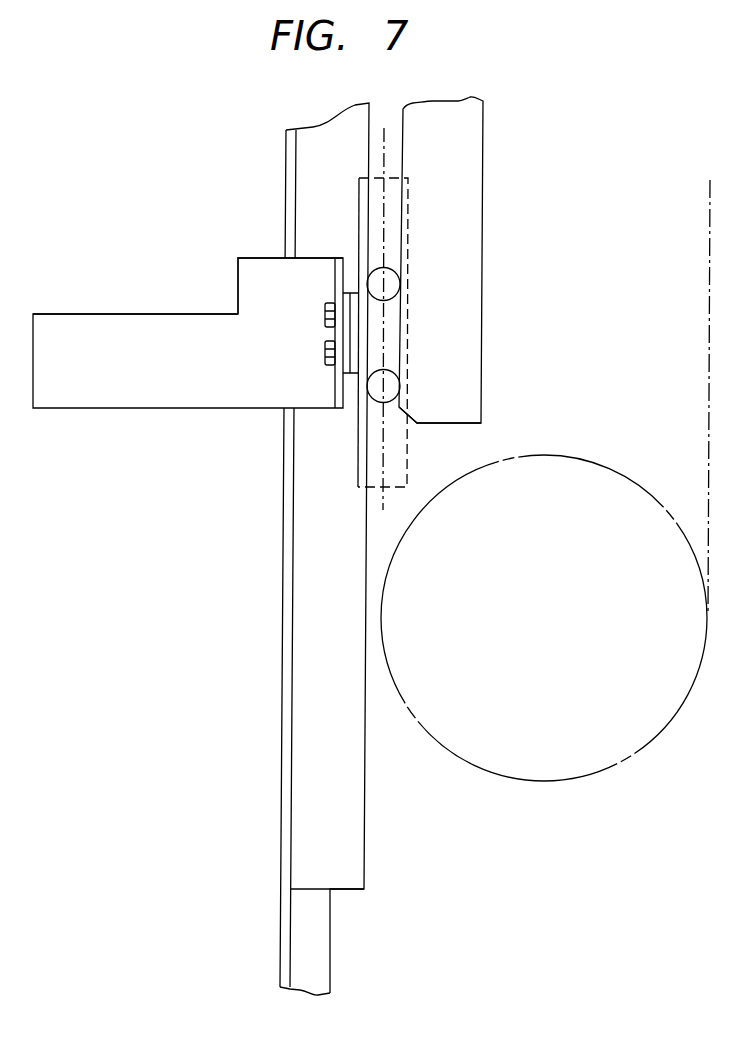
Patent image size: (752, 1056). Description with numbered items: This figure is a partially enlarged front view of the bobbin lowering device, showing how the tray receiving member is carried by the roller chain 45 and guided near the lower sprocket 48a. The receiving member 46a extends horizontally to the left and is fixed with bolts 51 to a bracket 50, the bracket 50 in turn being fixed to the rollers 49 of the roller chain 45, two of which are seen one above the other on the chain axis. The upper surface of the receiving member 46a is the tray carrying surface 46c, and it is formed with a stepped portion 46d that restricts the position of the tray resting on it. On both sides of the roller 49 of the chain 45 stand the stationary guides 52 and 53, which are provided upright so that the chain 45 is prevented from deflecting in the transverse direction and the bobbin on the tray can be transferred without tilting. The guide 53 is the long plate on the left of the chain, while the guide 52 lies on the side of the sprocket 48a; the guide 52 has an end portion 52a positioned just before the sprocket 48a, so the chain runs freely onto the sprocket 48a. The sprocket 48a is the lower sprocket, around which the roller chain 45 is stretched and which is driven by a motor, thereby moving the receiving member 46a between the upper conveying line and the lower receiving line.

The roller chain 45 is at (384, 223).
The receiving member 46a is at (172, 397).
The tray carrying surface 46c is at (141, 312).
The stepped portion 46d is at (237, 309).
The lower sprocket 48a is at (627, 472).
The roller 49 is at (393, 282).
The bracket 50 is at (403, 470).
The bolt 51 is at (325, 352).
The stationary guide 52 is at (475, 166).
The end portion of guide 52a is at (447, 425).
The stationary guide 53 is at (305, 467).